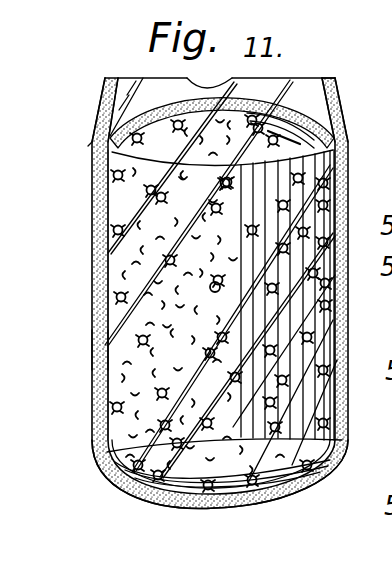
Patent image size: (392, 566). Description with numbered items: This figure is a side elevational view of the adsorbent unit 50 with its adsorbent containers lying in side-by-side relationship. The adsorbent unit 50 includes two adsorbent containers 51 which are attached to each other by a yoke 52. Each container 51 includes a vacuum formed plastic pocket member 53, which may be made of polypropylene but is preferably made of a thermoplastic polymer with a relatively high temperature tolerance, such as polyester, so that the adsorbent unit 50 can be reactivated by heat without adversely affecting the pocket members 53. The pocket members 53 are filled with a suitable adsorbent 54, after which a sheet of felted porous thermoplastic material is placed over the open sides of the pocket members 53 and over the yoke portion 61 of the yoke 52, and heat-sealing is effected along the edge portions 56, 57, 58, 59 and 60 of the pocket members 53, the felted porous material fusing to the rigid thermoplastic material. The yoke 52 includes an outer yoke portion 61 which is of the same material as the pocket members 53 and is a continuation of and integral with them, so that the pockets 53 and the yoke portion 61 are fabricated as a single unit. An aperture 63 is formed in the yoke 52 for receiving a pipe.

The adsorbent unit 50 is at (100, 61).
The adsorbent container 51 is at (86, 299).
The yoke 52 is at (339, 78).
The pocket member 53 is at (108, 216).
The adsorbent 54 is at (108, 181).
The edge portion 56 is at (350, 340).
The edge portion 57 is at (217, 510).
The edge portion 58 is at (94, 347).
The edge portion 59 is at (103, 94).
The edge portion 60 is at (146, 115).
The yoke portion 61 is at (324, 53).
The aperture 63 is at (221, 62).